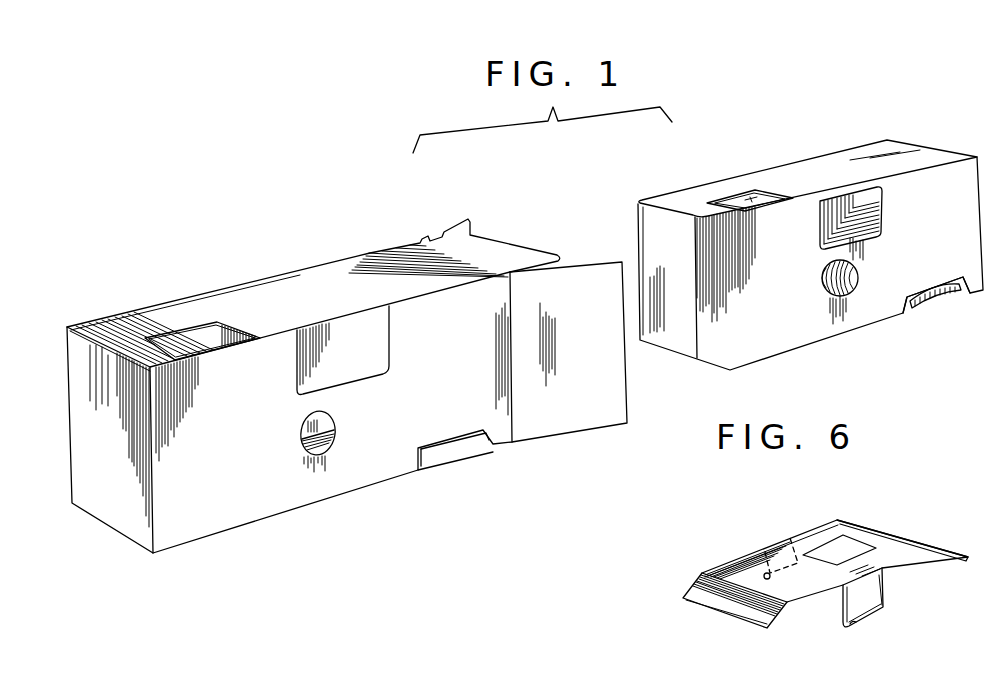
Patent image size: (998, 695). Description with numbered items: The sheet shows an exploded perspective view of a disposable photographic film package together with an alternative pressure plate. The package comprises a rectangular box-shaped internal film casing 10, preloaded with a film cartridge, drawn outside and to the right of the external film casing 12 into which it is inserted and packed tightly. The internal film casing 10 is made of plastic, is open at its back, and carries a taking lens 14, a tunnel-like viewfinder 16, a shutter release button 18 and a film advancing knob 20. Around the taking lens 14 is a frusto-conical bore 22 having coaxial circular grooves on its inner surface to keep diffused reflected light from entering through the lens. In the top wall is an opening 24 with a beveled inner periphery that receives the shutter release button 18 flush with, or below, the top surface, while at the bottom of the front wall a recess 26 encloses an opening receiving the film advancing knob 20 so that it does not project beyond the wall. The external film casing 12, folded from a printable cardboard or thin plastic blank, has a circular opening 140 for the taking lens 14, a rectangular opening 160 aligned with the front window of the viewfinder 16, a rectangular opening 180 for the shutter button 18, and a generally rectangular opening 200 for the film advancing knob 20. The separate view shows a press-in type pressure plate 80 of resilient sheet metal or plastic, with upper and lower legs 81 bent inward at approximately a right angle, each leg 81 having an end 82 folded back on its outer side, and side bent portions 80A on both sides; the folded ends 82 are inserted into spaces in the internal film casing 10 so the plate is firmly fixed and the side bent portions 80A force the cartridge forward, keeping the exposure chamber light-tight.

In FIG. 1, the internal film casing 10 is at (805, 136).
In FIG. 1, the external film casing 12 is at (283, 258).
In FIG. 1, the taking lens 14 is at (822, 279).
In FIG. 1, the tunnel-like viewfinder 16 is at (885, 211).
In FIG. 1, the shutter release button 18 is at (757, 190).
In FIG. 1, the film advancing knob 20 is at (940, 303).
In FIG. 1, the frusto-conical bore 22 is at (858, 277).
In FIG. 1, the opening 24 is at (726, 200).
In FIG. 1, the recess 26 is at (910, 316).
In FIG. 6, the press-in type pressure plate 80 is at (843, 521).
In FIG. 6, the side bent portions 80A is at (700, 590).
In FIG. 6, the legs 81 is at (868, 590).
In FIG. 6, the folded ends 82 is at (850, 628).
In FIG. 1, the circular opening 140 is at (337, 434).
In FIG. 1, the rectangular opening 160 is at (395, 348).
In FIG. 1, the rectangular opening 180 is at (245, 326).
In FIG. 1, the generally rectangular opening 200 is at (456, 458).